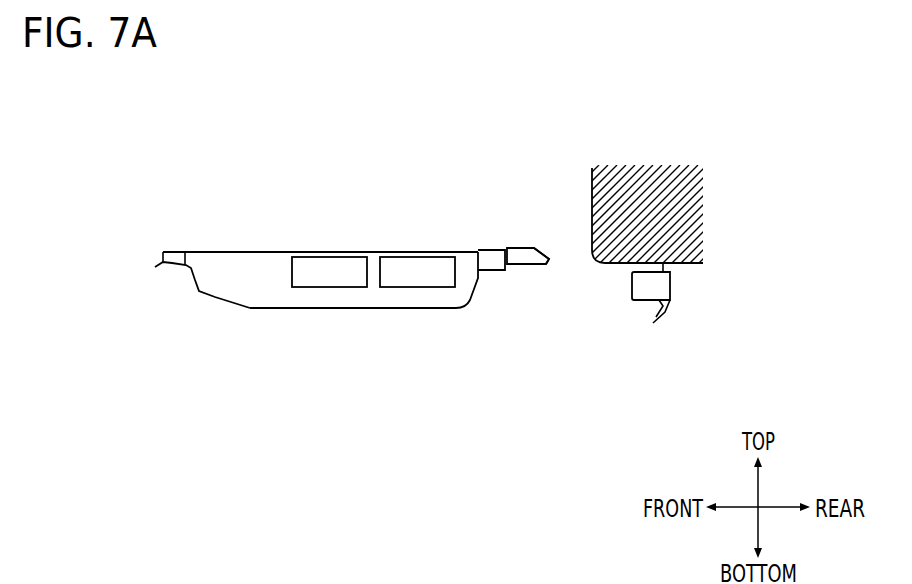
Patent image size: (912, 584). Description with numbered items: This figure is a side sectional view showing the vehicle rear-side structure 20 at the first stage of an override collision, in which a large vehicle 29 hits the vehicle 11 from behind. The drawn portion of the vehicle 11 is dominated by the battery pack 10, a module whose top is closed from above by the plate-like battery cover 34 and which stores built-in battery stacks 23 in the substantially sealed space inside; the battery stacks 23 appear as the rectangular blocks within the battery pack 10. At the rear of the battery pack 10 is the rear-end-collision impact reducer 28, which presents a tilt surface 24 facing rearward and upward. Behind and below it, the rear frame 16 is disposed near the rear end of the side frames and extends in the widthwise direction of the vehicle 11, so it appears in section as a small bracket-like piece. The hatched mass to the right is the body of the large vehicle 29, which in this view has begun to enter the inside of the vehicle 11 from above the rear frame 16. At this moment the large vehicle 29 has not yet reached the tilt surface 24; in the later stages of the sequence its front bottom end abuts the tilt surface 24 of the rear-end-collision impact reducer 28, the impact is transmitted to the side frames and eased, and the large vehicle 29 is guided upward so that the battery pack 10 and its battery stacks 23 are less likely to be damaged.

The battery pack 10 is at (268, 340).
The vehicle 11 is at (211, 139).
The rear frame 16 is at (643, 303).
The vehicle rear-side structure 20 is at (449, 180).
The battery stack 23 is at (340, 287).
The tilt surface 24 is at (546, 256).
The rear-end-collision impact reducer 28 is at (537, 265).
The large vehicle 29 is at (591, 187).
The battery cover 34 is at (352, 243).